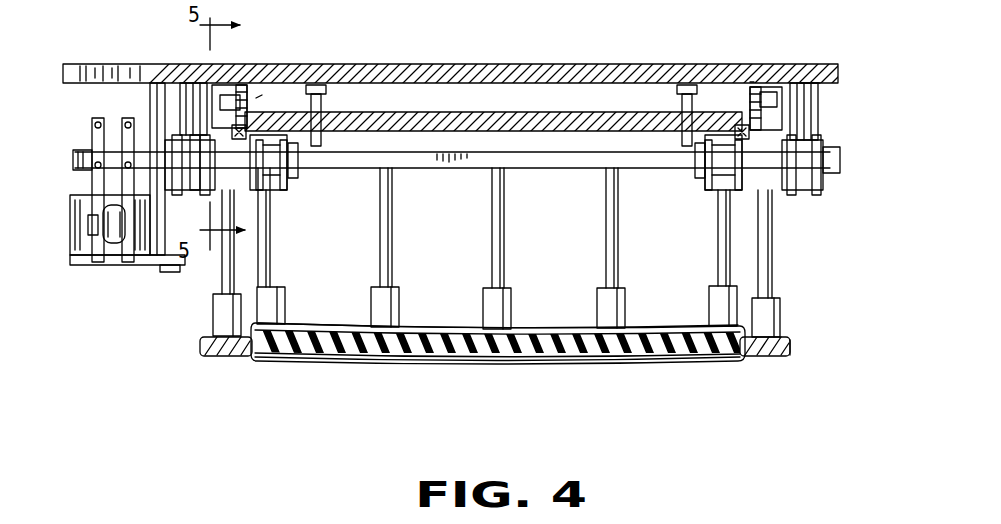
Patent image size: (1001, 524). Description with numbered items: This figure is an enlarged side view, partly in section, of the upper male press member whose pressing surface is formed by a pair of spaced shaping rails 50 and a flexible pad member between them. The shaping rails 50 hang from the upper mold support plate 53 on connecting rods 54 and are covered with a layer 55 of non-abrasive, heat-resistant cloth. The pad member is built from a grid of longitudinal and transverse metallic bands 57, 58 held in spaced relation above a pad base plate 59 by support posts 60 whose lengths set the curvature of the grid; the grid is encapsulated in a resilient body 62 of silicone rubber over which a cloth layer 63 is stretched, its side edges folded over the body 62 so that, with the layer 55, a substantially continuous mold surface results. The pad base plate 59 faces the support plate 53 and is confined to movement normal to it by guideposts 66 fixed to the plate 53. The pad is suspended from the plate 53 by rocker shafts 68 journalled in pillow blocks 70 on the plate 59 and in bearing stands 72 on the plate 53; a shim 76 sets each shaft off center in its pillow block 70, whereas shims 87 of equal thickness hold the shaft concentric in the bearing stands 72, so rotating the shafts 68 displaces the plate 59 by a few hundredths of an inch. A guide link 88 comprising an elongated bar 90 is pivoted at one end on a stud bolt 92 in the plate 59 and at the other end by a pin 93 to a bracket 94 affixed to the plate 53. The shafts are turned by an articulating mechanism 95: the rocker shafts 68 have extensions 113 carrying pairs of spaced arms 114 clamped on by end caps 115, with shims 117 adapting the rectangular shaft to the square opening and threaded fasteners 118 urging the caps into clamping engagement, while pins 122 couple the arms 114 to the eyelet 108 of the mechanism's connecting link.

The shaping rails 50 is at (238, 357).
The upper mold support plate 53 is at (500, 68).
The connecting rods 54 is at (770, 232).
The layer 55 is at (773, 358).
The longitudinally extending metallic bands 57 is at (545, 336).
The transversely extending metallic bands 58 is at (498, 344).
The pad base plate 59 is at (553, 118).
The support posts 60 is at (493, 217).
The encapsulating body 62 is at (473, 348).
The layer 63 is at (368, 362).
The guideposts 66 is at (318, 86).
The rocker shafts 68 is at (520, 162).
The pillow blocks 70 is at (277, 190).
The bearing stands 72 is at (195, 83).
The shim 76 is at (297, 150).
The removable shims 87 is at (840, 172).
The guide link 88 is at (255, 97).
The elongated bar 90 is at (247, 107).
The stud bolt 92 is at (322, 118).
The pin 93 is at (802, 83).
The bearing housing 94 is at (228, 90).
The articulating mechanism 95 is at (162, 300).
The eyelet 108 is at (113, 250).
The extensions 113 is at (148, 157).
The spaced arms 114 is at (125, 242).
The end caps 115 is at (115, 147).
The shims 117 is at (100, 145).
The threaded fasteners 118 is at (90, 125).
The pins 122 is at (90, 225).